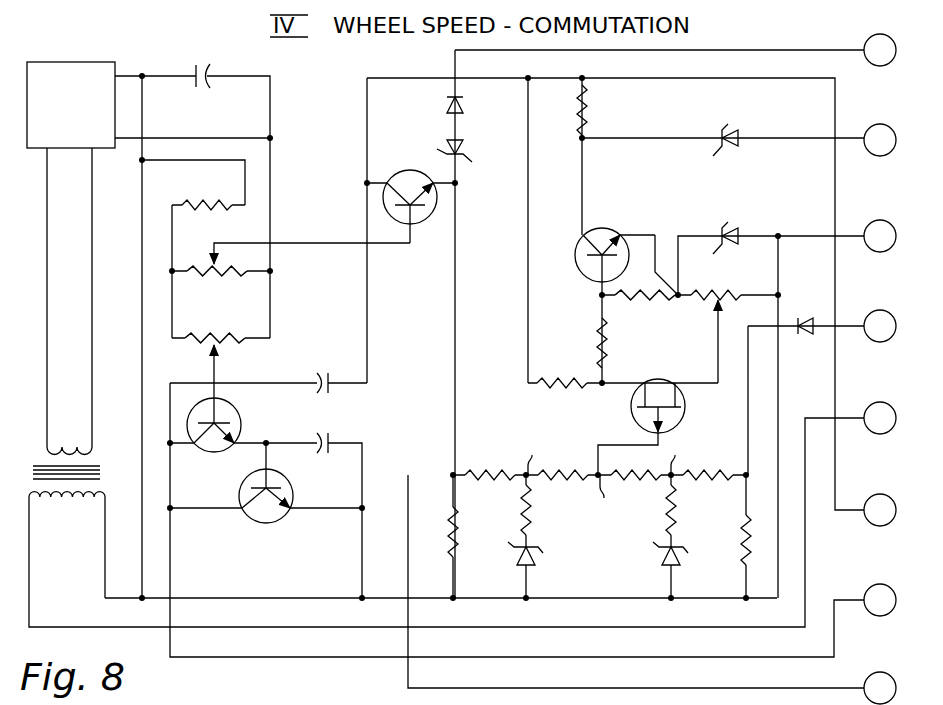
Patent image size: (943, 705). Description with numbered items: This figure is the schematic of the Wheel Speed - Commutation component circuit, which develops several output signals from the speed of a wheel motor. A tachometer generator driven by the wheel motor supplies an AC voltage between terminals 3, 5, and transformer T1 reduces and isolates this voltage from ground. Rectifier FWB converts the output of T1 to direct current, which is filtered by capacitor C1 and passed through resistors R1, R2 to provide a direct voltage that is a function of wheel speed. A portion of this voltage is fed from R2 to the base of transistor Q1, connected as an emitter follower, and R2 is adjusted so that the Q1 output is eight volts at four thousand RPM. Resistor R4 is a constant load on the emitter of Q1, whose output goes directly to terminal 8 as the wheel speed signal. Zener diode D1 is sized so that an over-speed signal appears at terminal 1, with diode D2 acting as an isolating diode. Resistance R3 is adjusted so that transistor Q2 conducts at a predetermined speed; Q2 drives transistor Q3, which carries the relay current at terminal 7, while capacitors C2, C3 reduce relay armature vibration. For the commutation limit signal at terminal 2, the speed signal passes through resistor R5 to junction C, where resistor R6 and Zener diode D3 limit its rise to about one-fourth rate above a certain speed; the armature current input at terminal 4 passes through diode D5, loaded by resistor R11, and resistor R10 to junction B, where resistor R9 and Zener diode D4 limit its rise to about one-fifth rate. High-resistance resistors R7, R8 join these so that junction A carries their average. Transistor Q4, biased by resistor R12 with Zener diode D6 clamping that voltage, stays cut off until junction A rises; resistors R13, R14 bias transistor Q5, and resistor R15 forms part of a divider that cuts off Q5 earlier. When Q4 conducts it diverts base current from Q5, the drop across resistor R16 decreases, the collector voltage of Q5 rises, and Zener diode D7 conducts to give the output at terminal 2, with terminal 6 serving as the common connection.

The rectifier FWB is at (71, 254).
The transformer T1 is at (67, 522).
The capacitor C1 is at (203, 89).
The capacitor C2 is at (338, 370).
The capacitor C3 is at (298, 505).
The resistor R1 is at (208, 192).
The resistor R2 is at (291, 272).
The resistance R3 is at (221, 366).
The resistor R4 is at (468, 536).
The resistor R5 is at (489, 463).
The resistor R6 is at (542, 511).
The resistor R7 is at (562, 463).
The resistor R8 is at (634, 489).
The resistor R9 is at (686, 511).
The resistor R10 is at (709, 463).
The resistor R11 is at (727, 536).
The resistor R12 is at (728, 325).
The resistor R13 is at (565, 371).
The resistor R14 is at (622, 343).
The resistor R15 is at (640, 309).
The resistor R16 is at (603, 110).
The transistor Q1 is at (411, 195).
The transistor Q2 is at (243, 417).
The transistor Q3 is at (266, 498).
The transistor Q4 is at (641, 406).
The transistor Q5 is at (602, 243).
The Zener diode D1 is at (465, 149).
The diode D2 is at (434, 109).
The Zener diode D3 is at (540, 570).
The Zener diode D4 is at (657, 570).
The diode D5 is at (801, 341).
The Zener diode D6 is at (736, 229).
The Zener diode D7 is at (731, 149).
The junction A is at (595, 495).
The junction B is at (669, 455).
The junction C is at (528, 452).
The terminal 1 is at (880, 50).
The terminal 2 is at (880, 140).
The terminal 3 is at (880, 236).
The terminal 4 is at (880, 326).
The terminal 5 is at (880, 418).
The terminal 6 is at (880, 510).
The terminal 7 is at (880, 600).
The terminal 8 is at (880, 688).